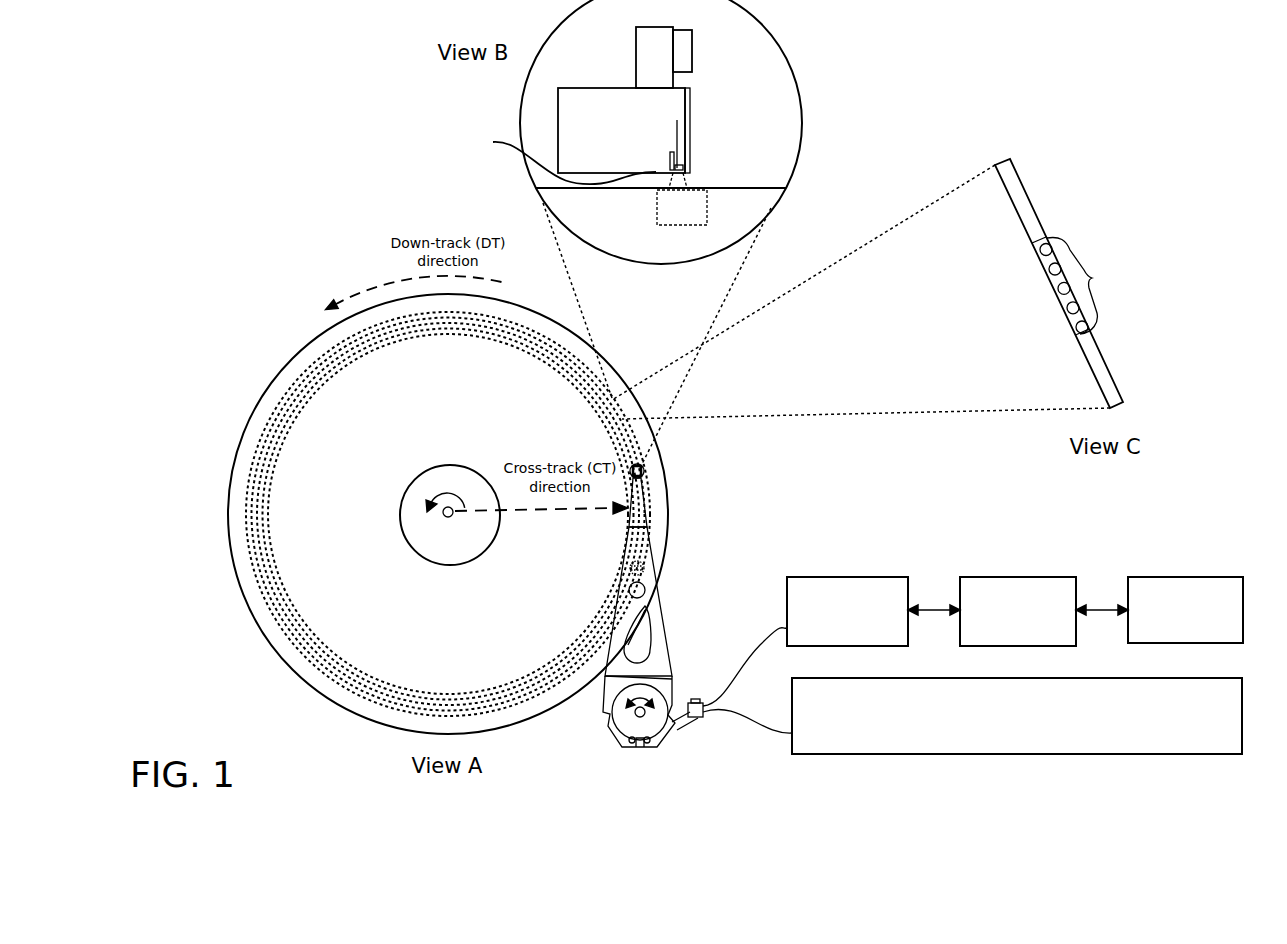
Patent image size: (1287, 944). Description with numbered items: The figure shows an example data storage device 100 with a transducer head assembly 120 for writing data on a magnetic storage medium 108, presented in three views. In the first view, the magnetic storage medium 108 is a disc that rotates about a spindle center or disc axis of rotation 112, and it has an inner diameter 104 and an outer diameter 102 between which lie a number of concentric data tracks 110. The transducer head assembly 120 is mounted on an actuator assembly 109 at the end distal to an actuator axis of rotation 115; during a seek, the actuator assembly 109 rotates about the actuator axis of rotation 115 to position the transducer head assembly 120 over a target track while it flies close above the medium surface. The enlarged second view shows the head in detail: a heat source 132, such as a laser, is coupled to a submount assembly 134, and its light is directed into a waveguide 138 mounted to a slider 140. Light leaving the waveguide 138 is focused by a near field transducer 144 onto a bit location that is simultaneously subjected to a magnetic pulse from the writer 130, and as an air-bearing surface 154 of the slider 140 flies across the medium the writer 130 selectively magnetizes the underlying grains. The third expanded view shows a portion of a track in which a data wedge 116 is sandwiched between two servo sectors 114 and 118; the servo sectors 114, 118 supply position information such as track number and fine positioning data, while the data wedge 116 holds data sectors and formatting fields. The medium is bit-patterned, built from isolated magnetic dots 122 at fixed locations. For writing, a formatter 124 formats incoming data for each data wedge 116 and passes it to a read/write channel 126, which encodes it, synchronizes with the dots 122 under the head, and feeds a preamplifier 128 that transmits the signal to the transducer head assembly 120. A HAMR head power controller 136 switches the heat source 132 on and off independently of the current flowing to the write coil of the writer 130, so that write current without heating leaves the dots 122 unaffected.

The data storage device 100 is at (305, 78).
The outer diameter 102 is at (298, 355).
The inner diameter 104 is at (402, 519).
The magnetic storage medium 108 is at (300, 678).
The actuator assembly 109 is at (653, 607).
The data tracks 110 is at (282, 628).
The disc axis of rotation 112 is at (440, 508).
The servo sector 114 is at (1110, 377).
The actuator axis of rotation 115 is at (640, 712).
The data wedge 116 is at (1092, 278).
The servo sector 118 is at (1035, 212).
The transducer head assembly 120 is at (644, 473).
The dots 122 is at (1050, 272).
The formatter 124 is at (1185, 610).
The read/write channel 126 is at (1018, 611).
The preamplifier 128 is at (847, 611).
The writer 130 is at (670, 163).
The heat source 132 is at (692, 48).
The submount assembly 134 is at (636, 54).
The HAMR head power controller 136 is at (1017, 716).
The waveguide 138 is at (692, 132).
The slider 140 is at (608, 88).
The near field transducer 144 is at (677, 122).
The air-bearing surface 154 is at (554, 159).